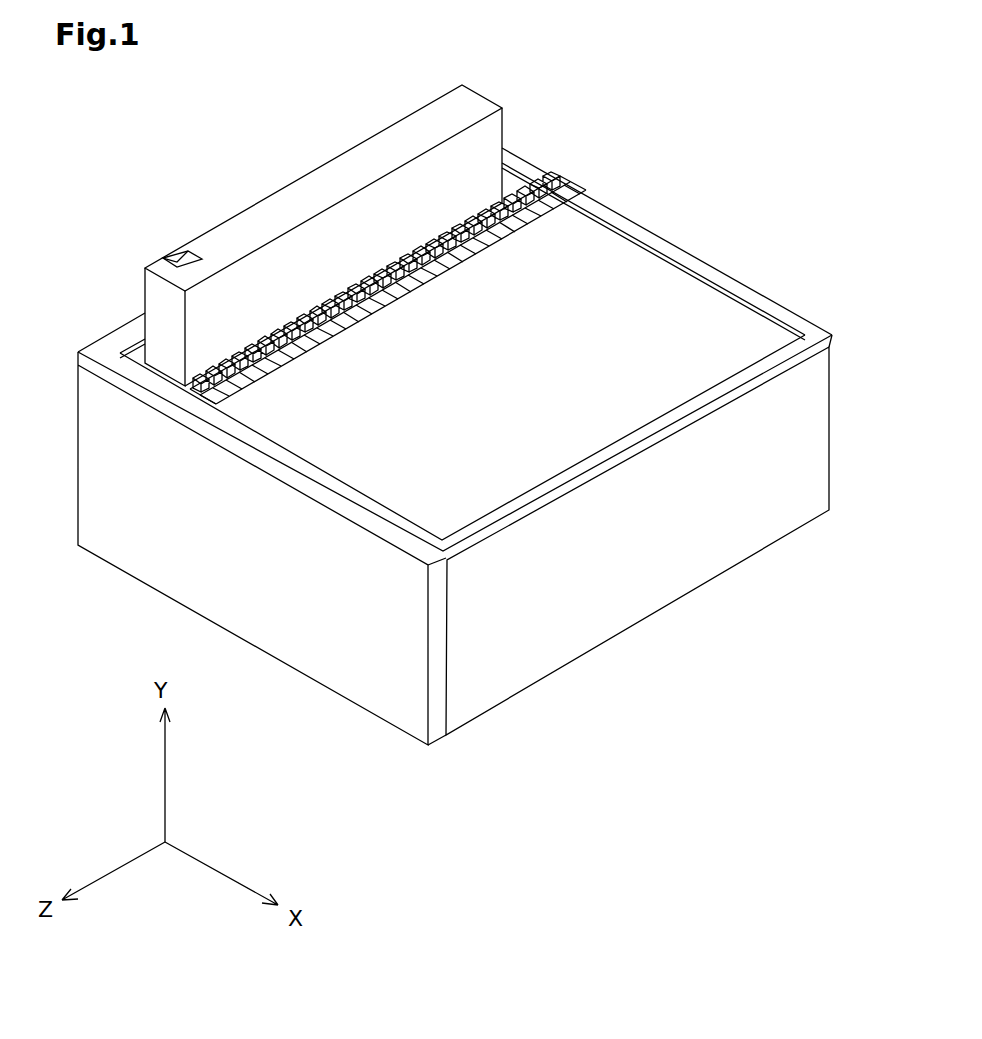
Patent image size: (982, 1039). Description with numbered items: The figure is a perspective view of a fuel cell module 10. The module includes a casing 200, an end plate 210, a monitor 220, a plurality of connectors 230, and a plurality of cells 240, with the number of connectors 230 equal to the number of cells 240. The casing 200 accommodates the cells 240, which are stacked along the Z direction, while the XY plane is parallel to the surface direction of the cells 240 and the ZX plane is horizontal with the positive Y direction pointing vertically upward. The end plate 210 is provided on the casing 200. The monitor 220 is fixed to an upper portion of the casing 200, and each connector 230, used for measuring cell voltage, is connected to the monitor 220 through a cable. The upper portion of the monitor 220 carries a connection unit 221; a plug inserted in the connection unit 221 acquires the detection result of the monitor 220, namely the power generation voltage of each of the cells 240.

The fuel cell module 10 is at (777, 134).
The casing 200 is at (628, 598).
The end plate 210 is at (150, 546).
The monitor 220 is at (285, 196).
The connection unit 221 is at (182, 252).
The connectors 230 is at (222, 372).
The cells 240 is at (556, 215).